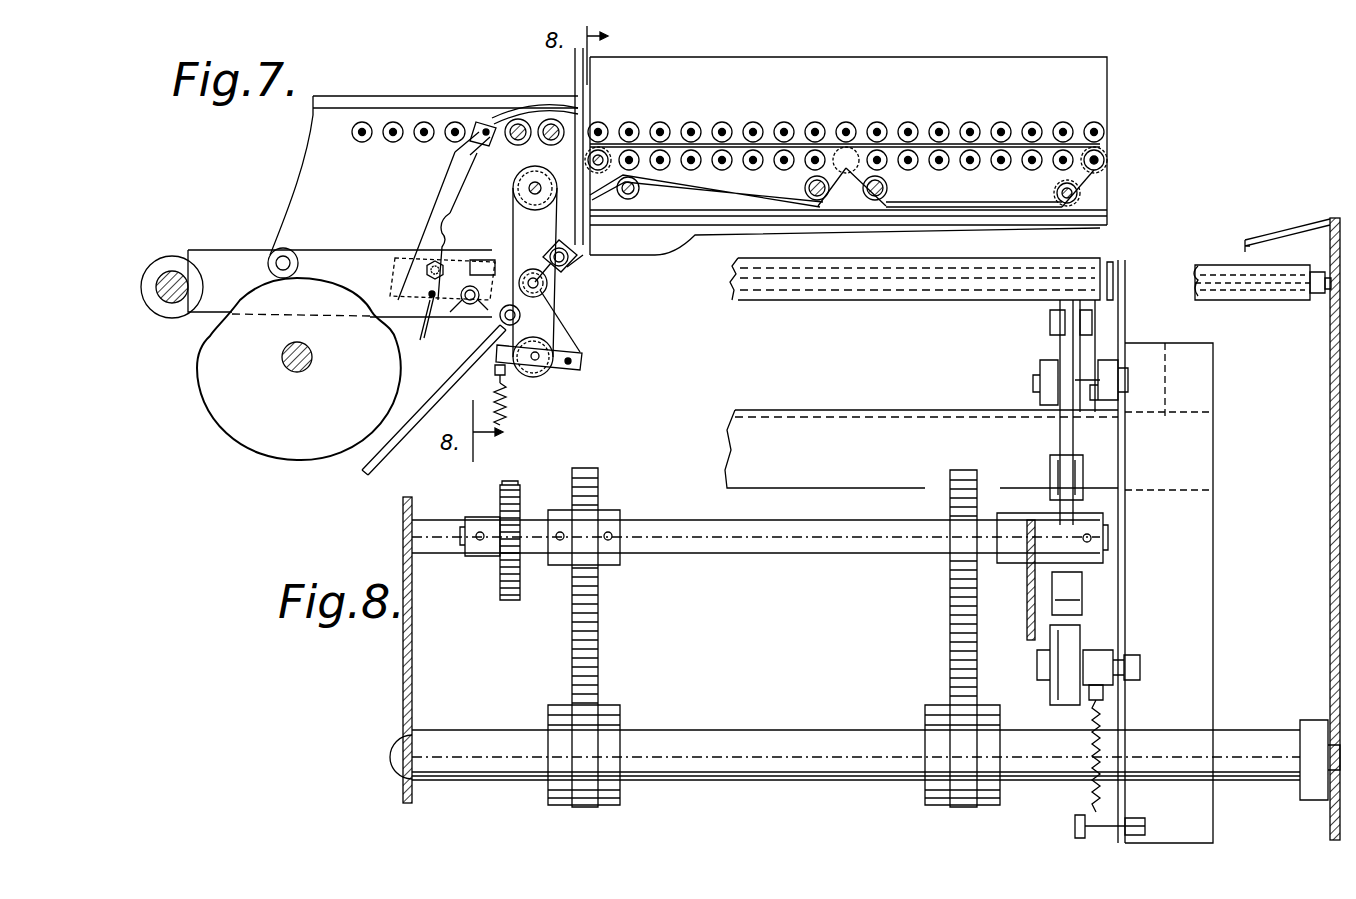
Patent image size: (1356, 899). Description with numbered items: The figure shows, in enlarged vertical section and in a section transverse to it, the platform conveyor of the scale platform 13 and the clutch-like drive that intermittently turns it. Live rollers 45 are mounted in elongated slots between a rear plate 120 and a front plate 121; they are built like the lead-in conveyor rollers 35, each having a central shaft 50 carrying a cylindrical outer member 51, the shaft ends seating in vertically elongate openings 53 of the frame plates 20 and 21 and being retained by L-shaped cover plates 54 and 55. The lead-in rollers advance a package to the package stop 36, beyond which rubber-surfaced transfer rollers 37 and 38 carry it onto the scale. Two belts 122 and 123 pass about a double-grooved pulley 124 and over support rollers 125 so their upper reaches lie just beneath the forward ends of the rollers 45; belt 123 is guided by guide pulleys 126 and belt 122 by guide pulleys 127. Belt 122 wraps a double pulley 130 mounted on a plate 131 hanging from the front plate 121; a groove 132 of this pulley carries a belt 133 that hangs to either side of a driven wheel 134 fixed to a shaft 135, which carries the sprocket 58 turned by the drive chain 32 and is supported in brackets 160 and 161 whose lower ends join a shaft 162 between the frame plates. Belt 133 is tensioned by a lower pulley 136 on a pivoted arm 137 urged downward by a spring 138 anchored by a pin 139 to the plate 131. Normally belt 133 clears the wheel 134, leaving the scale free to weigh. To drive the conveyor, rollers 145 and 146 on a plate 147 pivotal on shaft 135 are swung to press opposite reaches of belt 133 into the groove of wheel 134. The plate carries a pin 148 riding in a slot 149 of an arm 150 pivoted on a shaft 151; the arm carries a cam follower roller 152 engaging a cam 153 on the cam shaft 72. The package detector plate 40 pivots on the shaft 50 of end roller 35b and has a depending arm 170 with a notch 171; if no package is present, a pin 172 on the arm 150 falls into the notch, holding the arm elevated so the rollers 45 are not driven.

In FIG. 7, the scale platform 13 is at (1106, 198).
In FIG. 8, the frame plate 20 is at (1330, 560).
In FIG. 7, the frame plate 21 is at (300, 176).
In FIG. 8, the frame plate 21 is at (412, 652).
In FIG. 7, the endless drive chain 32 is at (434, 398).
In FIG. 8, the endless drive chain 32 is at (510, 600).
In FIG. 7, the live rollers 35 is at (397, 138).
In FIG. 8, the live rollers 35 is at (1197, 265).
In FIG. 7, the end roller 35b is at (484, 120).
In FIG. 7, the package stop 36 is at (584, 90).
In FIG. 7, the rubber-surfaced roller 37 is at (518, 118).
In FIG. 7, the rubber-surfaced roller 38 is at (548, 78).
In FIG. 7, the package detector plate 40 is at (551, 118).
In FIG. 7, the live rollers of platform conveyor 45 is at (691, 126).
In FIG. 8, the live rollers of platform conveyor 45 is at (955, 302).
In FIG. 7, the central shaft 50 is at (483, 144).
In FIG. 8, the central shaft 50 is at (1196, 296).
In FIG. 8, the cylindrical outer member 51 is at (1258, 300).
In FIG. 8, the opening 53 is at (1327, 296).
In FIG. 8, the cover plate 54 is at (1292, 234).
In FIG. 7, the cover plate 55 is at (352, 97).
In FIG. 8, the sprocket 58 is at (506, 508).
In FIG. 7, the cam shaft 72 is at (296, 370).
In FIG. 7, the rear plate 120 is at (1092, 82).
In FIG. 8, the front plate 121 is at (1115, 264).
In FIG. 7, the drive belt 122 is at (726, 204).
In FIG. 8, the drive belt 122 is at (1084, 412).
In FIG. 7, the belt 123 is at (962, 208).
In FIG. 7, the double-grooved pulley 124 is at (850, 150).
In FIG. 7, the support rollers 125 is at (786, 184).
In FIG. 8, the support rollers 125 is at (1082, 590).
In FIG. 7, the guide pulleys 126 is at (1108, 162).
In FIG. 7, the guide pulleys 127 is at (602, 148).
In FIG. 8, the guide pulleys 127 is at (1060, 308).
In FIG. 7, the double pulley 130 is at (517, 194).
In FIG. 8, the double pulley 130 is at (1120, 408).
In FIG. 8, the plate 131 is at (1125, 614).
In FIG. 8, the groove 132 is at (1040, 402).
In FIG. 7, the belt 133 is at (522, 316).
In FIG. 8, the belt 133 is at (1060, 440).
In FIG. 7, the driven wheel 134 is at (548, 283).
In FIG. 8, the driven wheel 134 is at (1085, 510).
In FIG. 8, the rotatable shaft 135 is at (870, 553).
In FIG. 7, the lower pulley 136 is at (536, 377).
In FIG. 8, the lower pulley 136 is at (1052, 708).
In FIG. 7, the pivoted arm 137 is at (565, 368).
In FIG. 8, the pivoted arm 137 is at (1105, 641).
In FIG. 7, the spring 138 is at (510, 408).
In FIG. 8, the spring 138 is at (1118, 760).
In FIG. 8, the pin 139 is at (1075, 826).
In FIG. 7, the roller 145 is at (555, 330).
In FIG. 7, the roller 146 is at (568, 260).
In FIG. 8, the roller 146 is at (1085, 474).
In FIG. 7, the plate 147 is at (575, 252).
In FIG. 8, the plate 147 is at (1027, 595).
In FIG. 7, the pin 148 is at (470, 305).
In FIG. 7, the slot 149 is at (448, 320).
In FIG. 7, the arm 150 is at (318, 252).
In FIG. 7, the shaft 151 is at (168, 302).
In FIG. 7, the cam follower roller 152 is at (275, 248).
In FIG. 7, the cam 153 is at (265, 448).
In FIG. 8, the bracket 160 is at (603, 622).
In FIG. 8, the bracket 161 is at (945, 632).
In FIG. 8, the shaft 162 is at (770, 728).
In FIG. 7, the depending arm 170 is at (440, 180).
In FIG. 7, the notch 171 is at (432, 220).
In FIG. 7, the pin 172 is at (476, 259).